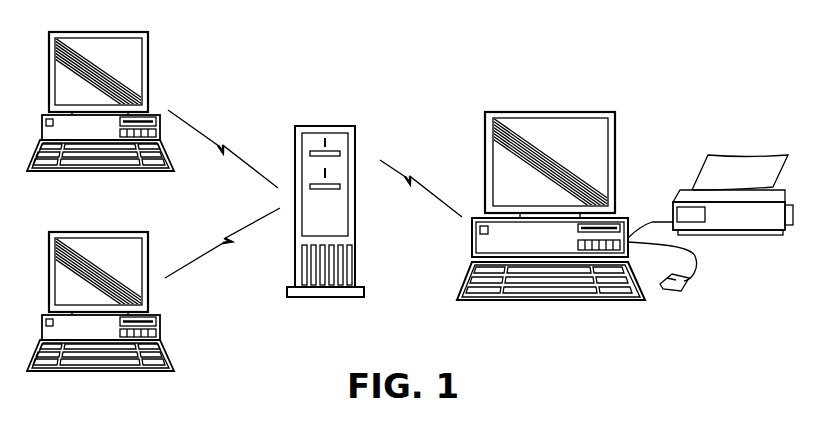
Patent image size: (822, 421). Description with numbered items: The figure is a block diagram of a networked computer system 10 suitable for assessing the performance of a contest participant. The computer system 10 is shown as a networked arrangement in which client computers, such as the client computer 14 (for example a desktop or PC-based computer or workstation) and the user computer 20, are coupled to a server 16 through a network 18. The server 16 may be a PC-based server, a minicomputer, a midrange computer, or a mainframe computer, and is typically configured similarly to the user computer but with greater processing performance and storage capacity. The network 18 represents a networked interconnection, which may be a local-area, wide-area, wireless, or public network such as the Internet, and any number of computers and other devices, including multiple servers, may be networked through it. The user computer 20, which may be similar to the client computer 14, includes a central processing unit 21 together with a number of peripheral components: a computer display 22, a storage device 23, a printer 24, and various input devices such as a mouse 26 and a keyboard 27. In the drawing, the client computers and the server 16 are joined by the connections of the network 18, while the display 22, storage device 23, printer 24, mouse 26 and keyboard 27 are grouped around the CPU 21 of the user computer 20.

The computer system 10 is at (439, 51).
The client computer 14 is at (50, 45).
The server 16 is at (328, 126).
The network 18 is at (229, 239).
The user computer 20 is at (549, 205).
The central processing unit 21 is at (478, 240).
The computer display 22 is at (516, 112).
The storage device 23 is at (615, 240).
The printer 24 is at (735, 232).
The mouse 26 is at (690, 287).
The keyboard 27 is at (487, 300).